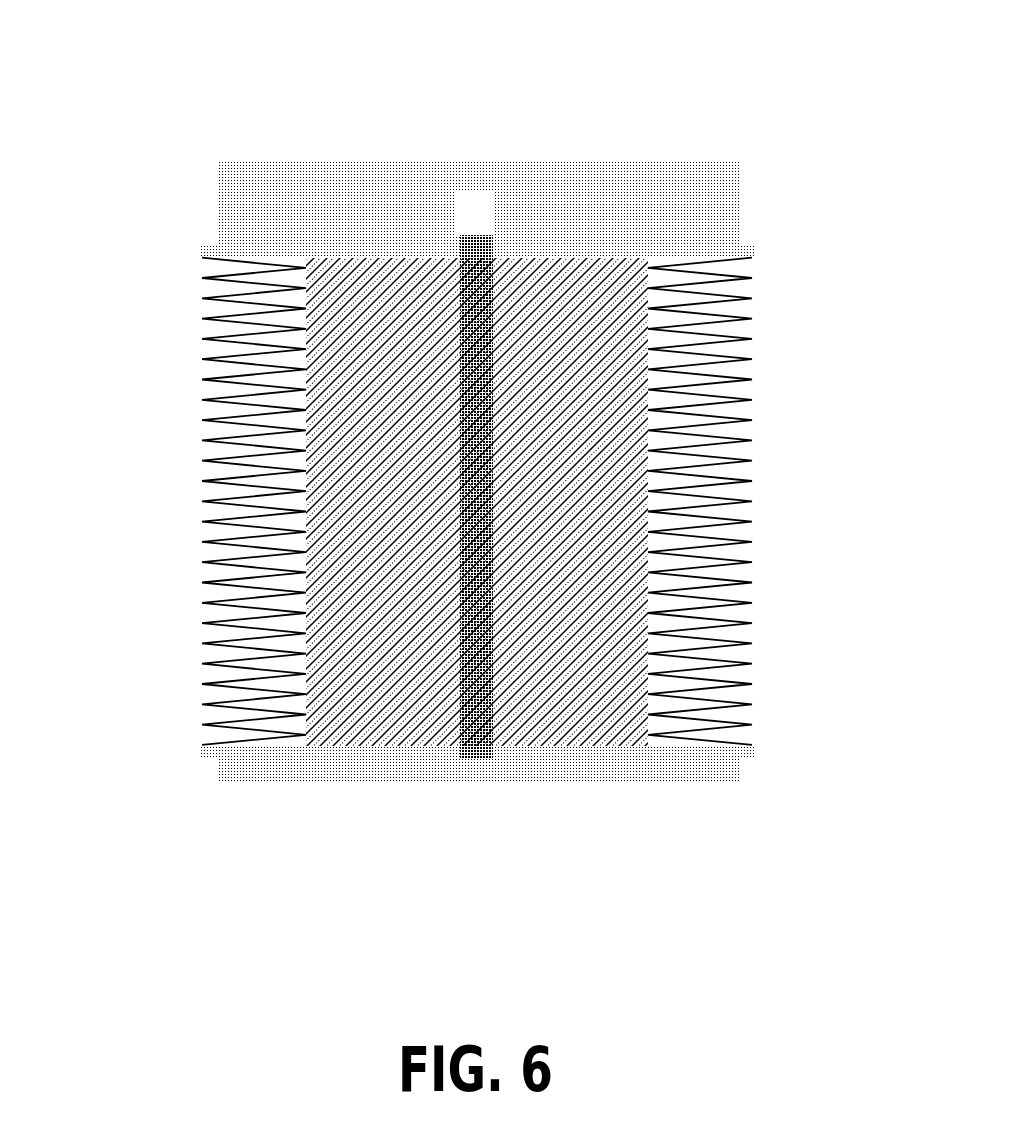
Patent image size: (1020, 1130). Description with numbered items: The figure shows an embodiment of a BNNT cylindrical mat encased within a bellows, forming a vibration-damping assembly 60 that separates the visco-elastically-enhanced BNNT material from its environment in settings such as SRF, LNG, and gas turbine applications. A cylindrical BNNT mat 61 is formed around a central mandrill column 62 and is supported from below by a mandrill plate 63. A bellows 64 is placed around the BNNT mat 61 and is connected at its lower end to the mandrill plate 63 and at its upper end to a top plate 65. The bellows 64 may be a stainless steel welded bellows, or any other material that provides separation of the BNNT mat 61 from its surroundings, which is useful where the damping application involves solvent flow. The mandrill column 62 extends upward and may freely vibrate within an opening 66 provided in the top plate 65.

The spring damper assembly 60 is at (337, 73).
The cylindrical BNNT mat 61 is at (412, 362).
The mandrill column 62 is at (472, 517).
The mandrill plate 63 is at (377, 765).
The bellows 64 is at (735, 432).
The top plate 65 is at (262, 205).
The opening 66 is at (497, 205).